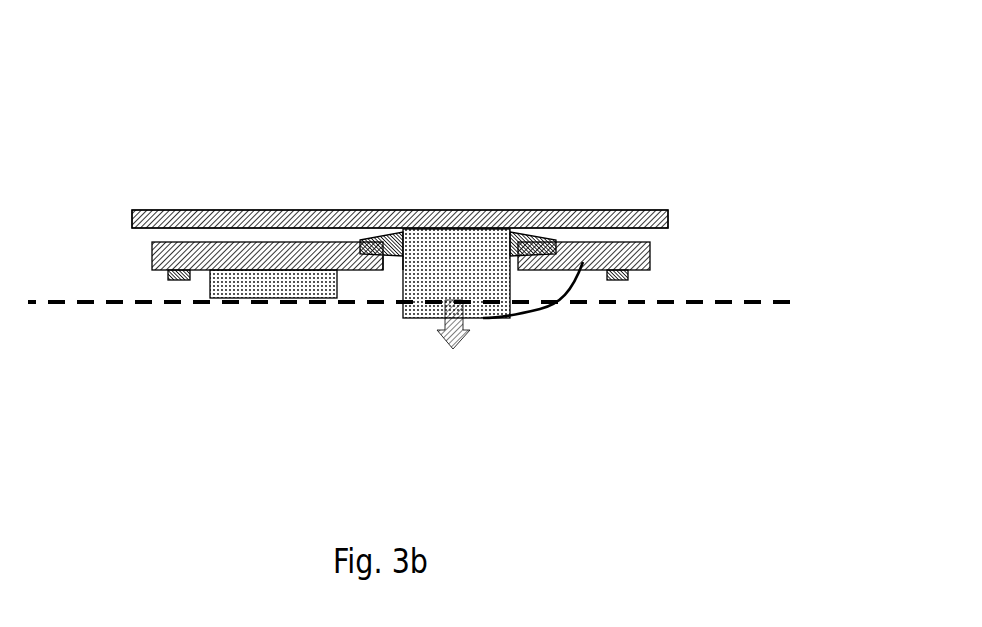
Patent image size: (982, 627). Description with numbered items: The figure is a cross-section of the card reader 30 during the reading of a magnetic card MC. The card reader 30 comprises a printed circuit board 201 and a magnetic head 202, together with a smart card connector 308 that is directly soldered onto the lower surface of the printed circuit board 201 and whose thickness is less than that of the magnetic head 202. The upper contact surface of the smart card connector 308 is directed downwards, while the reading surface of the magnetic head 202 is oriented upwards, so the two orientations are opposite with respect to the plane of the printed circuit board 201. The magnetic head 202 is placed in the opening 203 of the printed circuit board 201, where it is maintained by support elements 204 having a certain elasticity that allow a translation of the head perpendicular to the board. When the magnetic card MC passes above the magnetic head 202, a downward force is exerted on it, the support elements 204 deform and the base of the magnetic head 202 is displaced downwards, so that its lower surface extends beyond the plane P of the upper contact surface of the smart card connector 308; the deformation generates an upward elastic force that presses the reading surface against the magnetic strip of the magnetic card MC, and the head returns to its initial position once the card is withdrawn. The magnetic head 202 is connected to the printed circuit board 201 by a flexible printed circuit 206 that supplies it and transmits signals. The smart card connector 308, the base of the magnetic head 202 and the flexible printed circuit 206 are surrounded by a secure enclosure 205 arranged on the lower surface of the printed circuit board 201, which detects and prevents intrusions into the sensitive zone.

The card reader 30 is at (617, 162).
The magnetic card MC is at (191, 212).
The plane of the upper contact surface of the smart card connector P is at (747, 298).
The printed circuit board 201 is at (638, 268).
The magnetic head 202 is at (476, 305).
The opening 203 is at (391, 258).
The support elements 204 is at (371, 210).
The secure enclosure 205 is at (175, 282).
The flexible printed circuit 206 is at (545, 316).
The smart card connector 308 is at (284, 283).